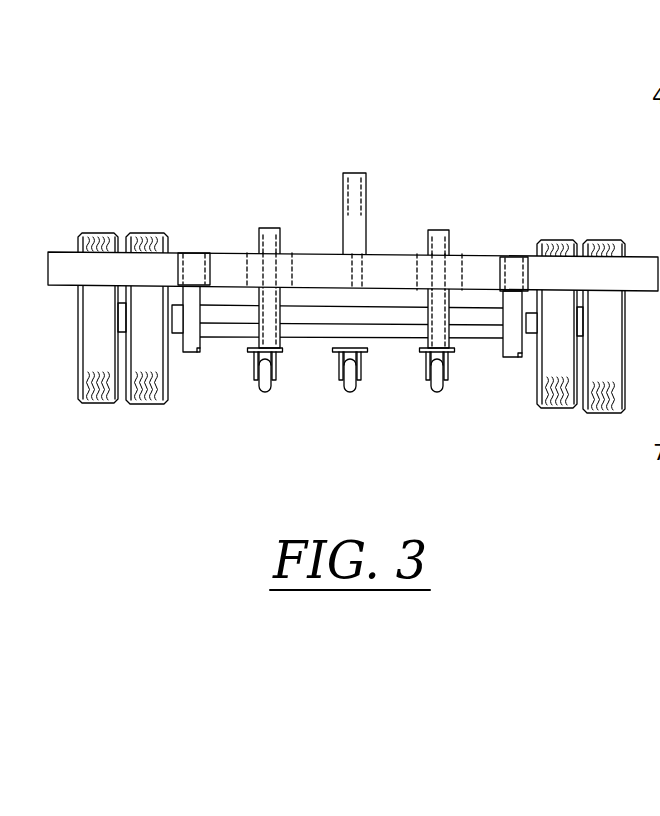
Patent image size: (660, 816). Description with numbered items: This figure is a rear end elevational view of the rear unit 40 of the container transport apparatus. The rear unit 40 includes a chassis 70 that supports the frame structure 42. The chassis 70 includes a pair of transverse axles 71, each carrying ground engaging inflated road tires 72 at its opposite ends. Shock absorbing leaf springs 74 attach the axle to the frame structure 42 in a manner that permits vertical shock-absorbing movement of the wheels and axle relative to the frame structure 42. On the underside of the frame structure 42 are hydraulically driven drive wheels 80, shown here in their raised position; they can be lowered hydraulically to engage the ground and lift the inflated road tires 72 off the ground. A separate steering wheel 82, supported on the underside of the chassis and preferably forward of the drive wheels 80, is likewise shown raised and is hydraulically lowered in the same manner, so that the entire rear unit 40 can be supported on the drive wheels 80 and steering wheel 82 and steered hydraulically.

The rear unit 40 is at (408, 167).
The frame structure 42 is at (647, 270).
The chassis 70 is at (307, 317).
The transverse axles 71 is at (192, 253).
The inflated road tires 72 is at (137, 404).
The shock absorbing leaf springs 74 is at (197, 353).
The drive wheels 80 is at (265, 393).
The steering wheel 82 is at (350, 393).